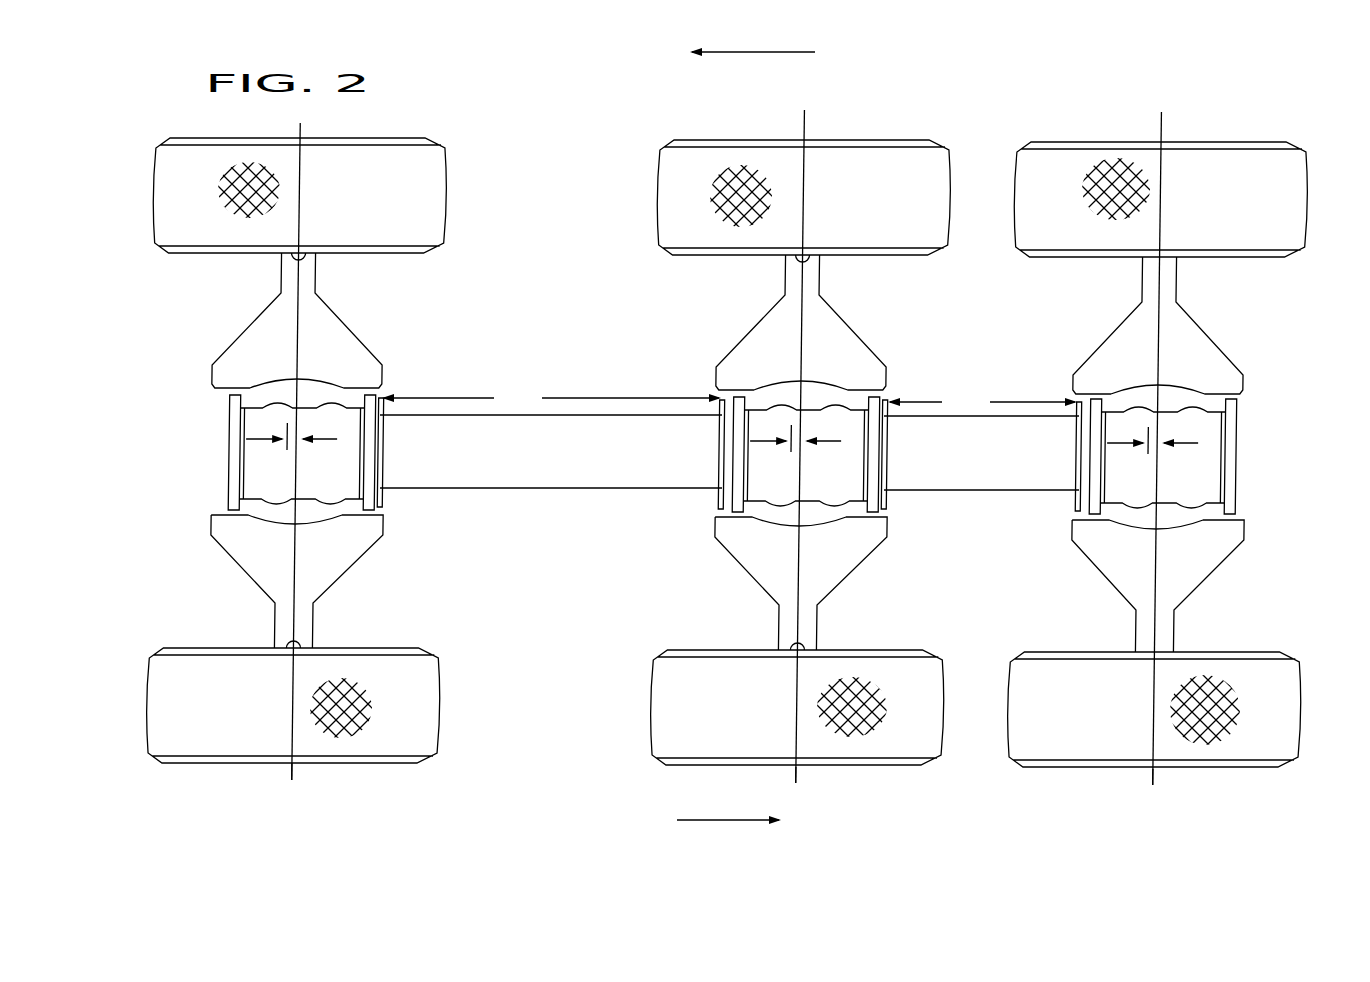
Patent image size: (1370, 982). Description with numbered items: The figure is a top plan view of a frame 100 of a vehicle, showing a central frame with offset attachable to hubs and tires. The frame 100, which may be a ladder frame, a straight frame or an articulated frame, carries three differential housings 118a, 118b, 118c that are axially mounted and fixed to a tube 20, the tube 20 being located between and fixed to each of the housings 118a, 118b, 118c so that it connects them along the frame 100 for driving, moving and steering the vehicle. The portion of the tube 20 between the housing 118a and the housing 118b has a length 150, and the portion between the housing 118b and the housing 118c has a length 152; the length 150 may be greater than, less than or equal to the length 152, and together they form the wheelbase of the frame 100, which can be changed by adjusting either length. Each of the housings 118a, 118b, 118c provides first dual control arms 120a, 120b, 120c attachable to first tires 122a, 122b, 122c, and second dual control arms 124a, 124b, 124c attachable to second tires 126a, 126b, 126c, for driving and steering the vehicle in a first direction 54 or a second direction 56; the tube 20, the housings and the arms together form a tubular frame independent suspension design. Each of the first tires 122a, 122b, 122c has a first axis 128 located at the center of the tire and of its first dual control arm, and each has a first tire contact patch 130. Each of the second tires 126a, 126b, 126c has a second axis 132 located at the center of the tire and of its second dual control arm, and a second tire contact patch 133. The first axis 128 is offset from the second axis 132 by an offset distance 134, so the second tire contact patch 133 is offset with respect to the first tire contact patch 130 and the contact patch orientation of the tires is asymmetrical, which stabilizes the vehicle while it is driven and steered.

The frame 100 is at (540, 111).
The first direction 54 is at (753, 39).
The second direction 56 is at (728, 835).
The tube 20 is at (495, 472).
The length 150 is at (551, 399).
The length 152 is at (982, 402).
The differential housing 118a is at (253, 465).
The differential housing 118b is at (747, 483).
The differential housing 118c is at (1123, 482).
The first dual control arm 120a is at (263, 335).
The first dual control arm 120b is at (775, 337).
The first dual control arm 120c is at (1128, 335).
The first tire 122a is at (425, 168).
The first tire 122b is at (925, 168).
The first tire 122c is at (1283, 167).
The second dual control arm 124a is at (342, 548).
The second dual control arm 124b is at (853, 545).
The second dual control arm 124c is at (1208, 548).
The second tire 126a is at (423, 677).
The second tire 126b is at (913, 685).
The second tire 126c is at (1273, 687).
The first axis 128 is at (731, 434).
The first tire contact patch 130 is at (216, 171).
The second axis 132 is at (725, 788).
The lower wheel contact region 133 is at (369, 727).
The offset distance 134 is at (722, 402).